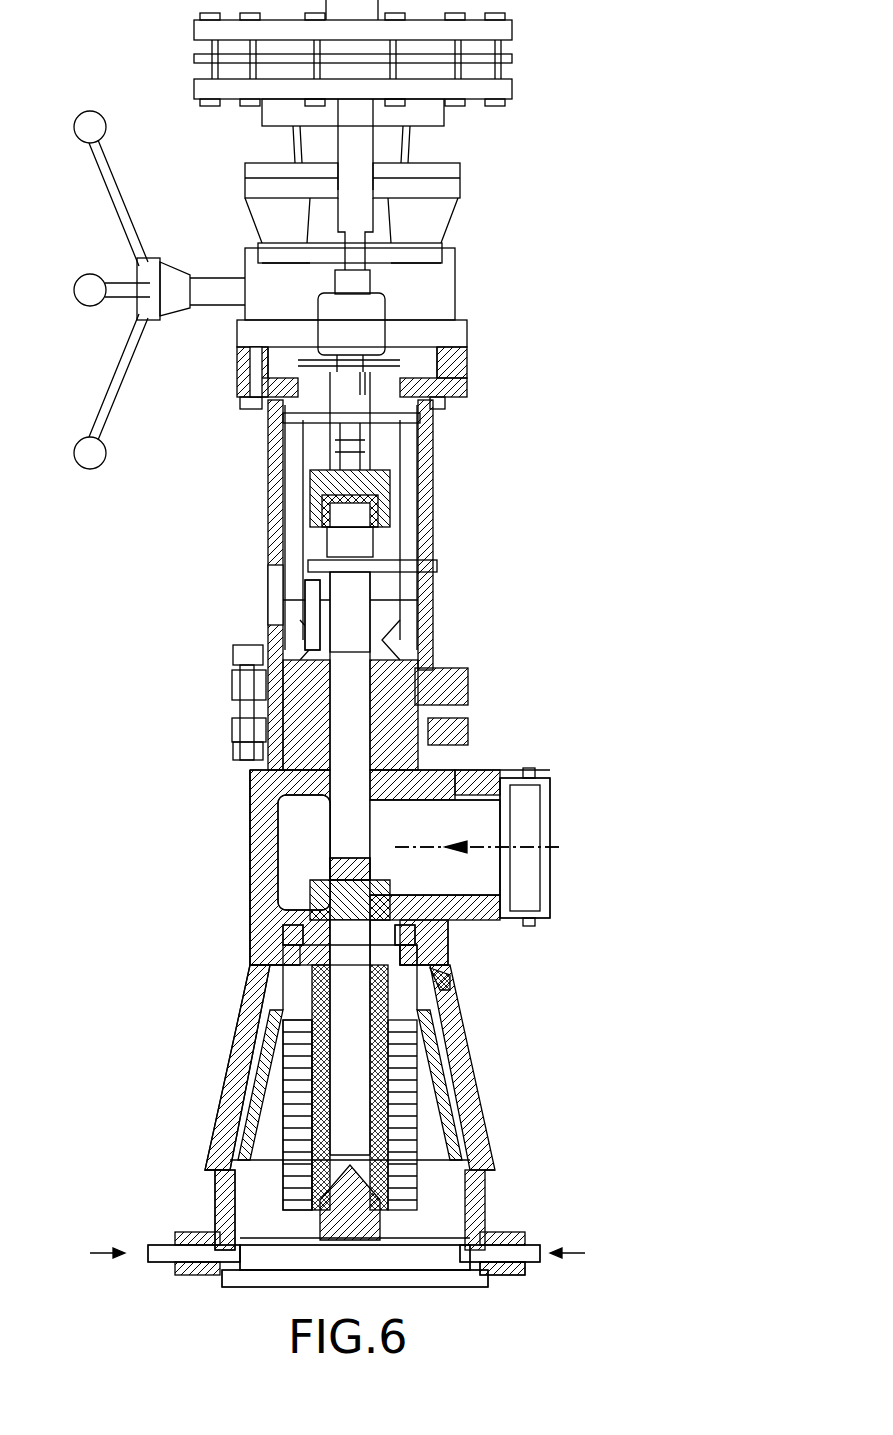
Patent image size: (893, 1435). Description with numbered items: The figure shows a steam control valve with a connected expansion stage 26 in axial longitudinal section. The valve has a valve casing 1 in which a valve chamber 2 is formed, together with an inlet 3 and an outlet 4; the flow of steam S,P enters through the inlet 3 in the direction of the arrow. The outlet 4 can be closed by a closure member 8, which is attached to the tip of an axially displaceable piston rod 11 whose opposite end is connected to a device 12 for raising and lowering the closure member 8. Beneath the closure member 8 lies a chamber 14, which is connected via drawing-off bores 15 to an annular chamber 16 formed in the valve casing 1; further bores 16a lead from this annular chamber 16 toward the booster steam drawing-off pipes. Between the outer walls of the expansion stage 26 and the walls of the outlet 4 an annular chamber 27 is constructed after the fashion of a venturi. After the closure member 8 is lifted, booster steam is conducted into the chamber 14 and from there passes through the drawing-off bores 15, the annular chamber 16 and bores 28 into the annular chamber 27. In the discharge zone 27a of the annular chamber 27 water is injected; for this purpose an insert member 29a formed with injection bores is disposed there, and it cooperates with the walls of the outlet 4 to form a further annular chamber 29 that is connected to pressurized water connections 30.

The device for raising and lowering the closure member 12 is at (144, 102).
The piston rod 11 is at (340, 640).
The valve casing 1 is at (258, 812).
The valve chamber 2 is at (285, 830).
The closure member 8 is at (322, 892).
The inlet 3 is at (548, 792).
The steam / product flow S,P is at (508, 831).
The chamber 14 is at (268, 952).
The drawing-off bores 15 is at (440, 938).
The annular chamber 16 is at (440, 952).
The further bores 16a is at (450, 988).
The expansion stage 26 is at (283, 1070).
The annular chamber 27 is at (225, 1113).
The discharge zone 27a is at (222, 1235).
The further annular chamber 29 is at (472, 1240).
The insert member 29a is at (490, 1283).
The pressurized water connections 30 is at (150, 1265).
The outlet 4 is at (258, 1285).
The bores 28 is at (425, 1268).